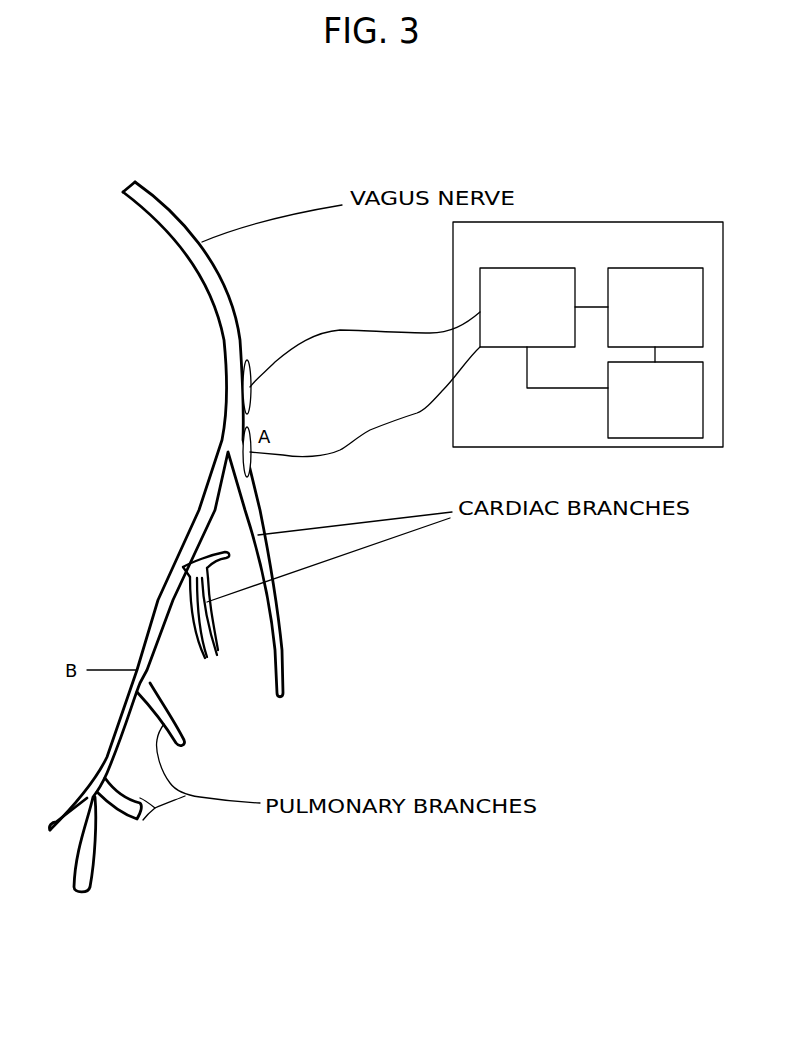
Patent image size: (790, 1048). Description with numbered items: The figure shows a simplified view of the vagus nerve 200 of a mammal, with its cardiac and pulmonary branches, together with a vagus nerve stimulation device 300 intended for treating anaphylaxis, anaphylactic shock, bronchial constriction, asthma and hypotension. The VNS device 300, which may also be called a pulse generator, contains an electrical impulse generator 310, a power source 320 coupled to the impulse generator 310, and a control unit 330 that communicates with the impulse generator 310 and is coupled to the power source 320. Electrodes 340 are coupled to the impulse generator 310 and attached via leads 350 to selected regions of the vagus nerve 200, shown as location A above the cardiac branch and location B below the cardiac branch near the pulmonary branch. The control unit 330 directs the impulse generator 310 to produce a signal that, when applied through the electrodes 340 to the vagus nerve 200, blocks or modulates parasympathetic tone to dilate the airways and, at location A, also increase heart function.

The vagus nerve 200 is at (250, 407).
The vagus nerve stimulation (VNS) device 300 is at (588, 334).
The electrical impulse generator 310 is at (527, 307).
The power source 320 is at (655, 400).
The control unit 330 is at (655, 307).
The electrodes 340 is at (384, 326).
The leads 350 is at (243, 374).